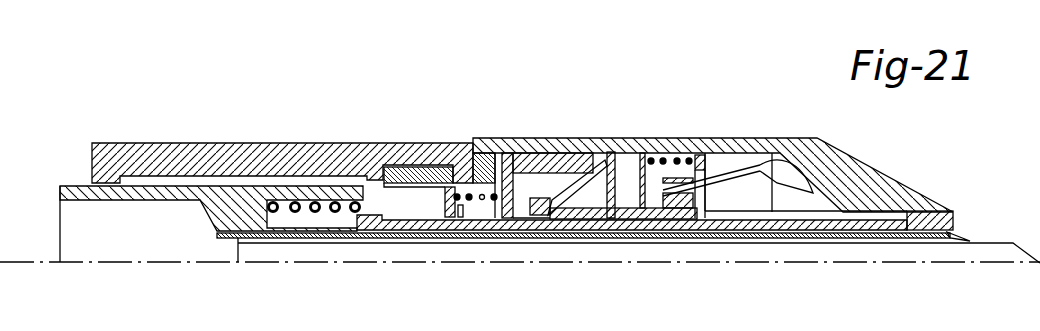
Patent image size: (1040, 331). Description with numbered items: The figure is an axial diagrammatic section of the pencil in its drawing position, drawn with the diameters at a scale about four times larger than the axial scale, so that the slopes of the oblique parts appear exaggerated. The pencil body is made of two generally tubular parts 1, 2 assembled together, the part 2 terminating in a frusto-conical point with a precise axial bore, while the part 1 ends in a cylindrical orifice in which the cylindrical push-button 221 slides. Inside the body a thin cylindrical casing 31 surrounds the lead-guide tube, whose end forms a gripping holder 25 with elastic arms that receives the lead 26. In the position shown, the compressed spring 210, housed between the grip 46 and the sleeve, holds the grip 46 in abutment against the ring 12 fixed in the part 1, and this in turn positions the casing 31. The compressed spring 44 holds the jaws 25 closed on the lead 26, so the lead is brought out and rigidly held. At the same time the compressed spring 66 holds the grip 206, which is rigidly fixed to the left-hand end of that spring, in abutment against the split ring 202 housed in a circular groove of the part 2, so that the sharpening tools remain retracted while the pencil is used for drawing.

The body part 1 is at (225, 147).
The body part 2 is at (733, 147).
The ring 12 is at (373, 167).
The gripping holder 25 is at (962, 232).
The lead 26 is at (968, 261).
The casing 31 is at (758, 224).
The coil spring 44 is at (298, 200).
The grip holder 46 is at (452, 188).
The spring 66 is at (665, 157).
The split ring 202 is at (611, 152).
The grip 206 is at (539, 198).
The spring 210 is at (471, 201).
The push-button 221 is at (82, 186).